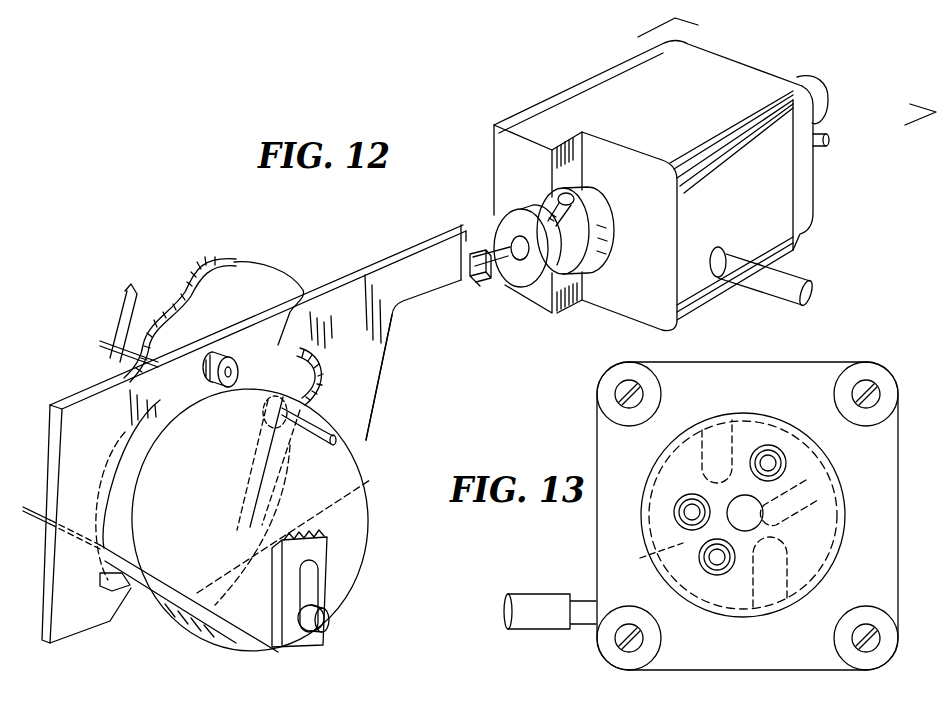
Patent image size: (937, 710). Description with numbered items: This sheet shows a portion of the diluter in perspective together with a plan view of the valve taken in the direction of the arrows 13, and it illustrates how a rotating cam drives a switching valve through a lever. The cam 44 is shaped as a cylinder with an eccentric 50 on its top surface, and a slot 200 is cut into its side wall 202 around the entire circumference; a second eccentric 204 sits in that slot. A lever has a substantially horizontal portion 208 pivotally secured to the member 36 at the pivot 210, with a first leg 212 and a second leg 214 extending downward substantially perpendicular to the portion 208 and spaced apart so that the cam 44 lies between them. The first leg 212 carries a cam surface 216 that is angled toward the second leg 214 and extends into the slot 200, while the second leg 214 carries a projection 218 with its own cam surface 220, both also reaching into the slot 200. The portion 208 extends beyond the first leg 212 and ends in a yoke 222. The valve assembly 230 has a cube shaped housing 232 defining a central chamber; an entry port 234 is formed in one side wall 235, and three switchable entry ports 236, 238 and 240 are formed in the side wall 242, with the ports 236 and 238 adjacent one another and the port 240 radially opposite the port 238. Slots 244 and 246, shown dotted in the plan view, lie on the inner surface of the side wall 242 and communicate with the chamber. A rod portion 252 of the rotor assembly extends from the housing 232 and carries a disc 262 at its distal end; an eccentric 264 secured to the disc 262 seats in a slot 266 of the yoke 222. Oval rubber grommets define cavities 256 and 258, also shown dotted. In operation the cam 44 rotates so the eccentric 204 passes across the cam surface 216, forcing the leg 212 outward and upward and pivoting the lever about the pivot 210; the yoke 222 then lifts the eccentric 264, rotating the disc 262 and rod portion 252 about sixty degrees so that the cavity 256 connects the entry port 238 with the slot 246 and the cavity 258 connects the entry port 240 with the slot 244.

In FIG. 12, the arrows 13— 13 is at (775, 80).
In FIG. 12, the valve assembly 230 is at (590, 89).
In FIG. 12, the housing 232 is at (700, 87).
In FIG. 12, the side wall 242 is at (770, 78).
In FIG. 13, the side wall 242 is at (780, 370).
In FIG. 12, the rod portion 252 is at (590, 216).
In FIG. 12, the side wall 235 is at (700, 215).
In FIG. 12, the entry port 234 is at (727, 257).
In FIG. 13, the entry port 234 is at (587, 597).
In FIG. 12, the yoke 222 is at (462, 225).
In FIG. 12, the eccentric 264 is at (468, 261).
In FIG. 12, the slot 266 is at (480, 283).
In FIG. 12, the disc 262 is at (530, 273).
In FIG. 12, the member 36 is at (233, 278).
In FIG. 12, the slot 200 is at (350, 274).
In FIG. 12, the first substantially horizontally disposed portion 208 is at (283, 327).
In FIG. 12, the pivot 210 is at (233, 357).
In FIG. 12, the second eccentric 204 is at (312, 392).
In FIG. 12, the first leg 212 is at (373, 407).
In FIG. 12, the cam surface 216 is at (263, 463).
In FIG. 12, the projection 218 is at (100, 582).
In FIG. 12, the cam surface 220 is at (115, 610).
In FIG. 12, the second leg 214 is at (62, 627).
In FIG. 12, the side wall 202 is at (195, 577).
In FIG. 12, the cam 44 is at (260, 628).
In FIG. 12, the eccentric 50 is at (330, 622).
In FIG. 13, the slot 244 is at (727, 430).
In FIG. 13, the entry port 240 is at (788, 457).
In FIG. 13, the cavity 258 is at (838, 483).
In FIG. 13, the entry port 236 is at (678, 512).
In FIG. 13, the cavity 256 is at (642, 562).
In FIG. 13, the slot 246 is at (790, 567).
In FIG. 13, the entry port 238 is at (710, 577).